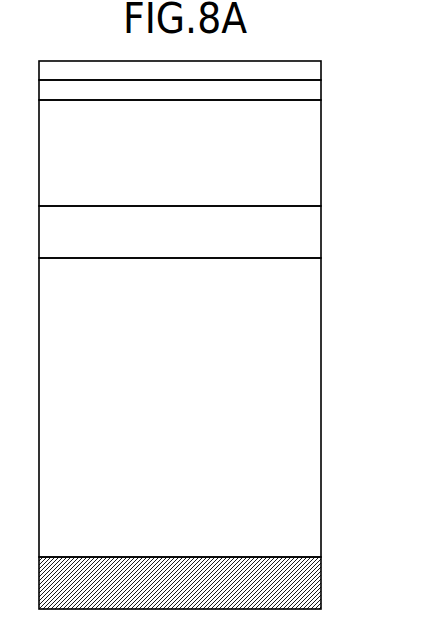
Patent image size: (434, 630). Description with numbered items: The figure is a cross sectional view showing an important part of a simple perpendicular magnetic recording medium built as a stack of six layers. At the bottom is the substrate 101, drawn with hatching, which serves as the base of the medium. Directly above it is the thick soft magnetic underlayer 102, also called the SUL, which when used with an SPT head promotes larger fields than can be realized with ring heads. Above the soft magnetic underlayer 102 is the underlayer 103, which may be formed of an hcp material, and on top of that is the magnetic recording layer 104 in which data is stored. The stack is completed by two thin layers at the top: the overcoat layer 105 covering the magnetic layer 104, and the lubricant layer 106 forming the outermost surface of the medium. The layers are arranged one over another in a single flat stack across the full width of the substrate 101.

The substrate 101 is at (318, 594).
The soft magnetic underlayer 102 is at (314, 430).
The underlayer 103 is at (314, 241).
The magnetic layer 104 is at (314, 151).
The overcoat layer 105 is at (314, 101).
The lubricant layer 106 is at (314, 72).